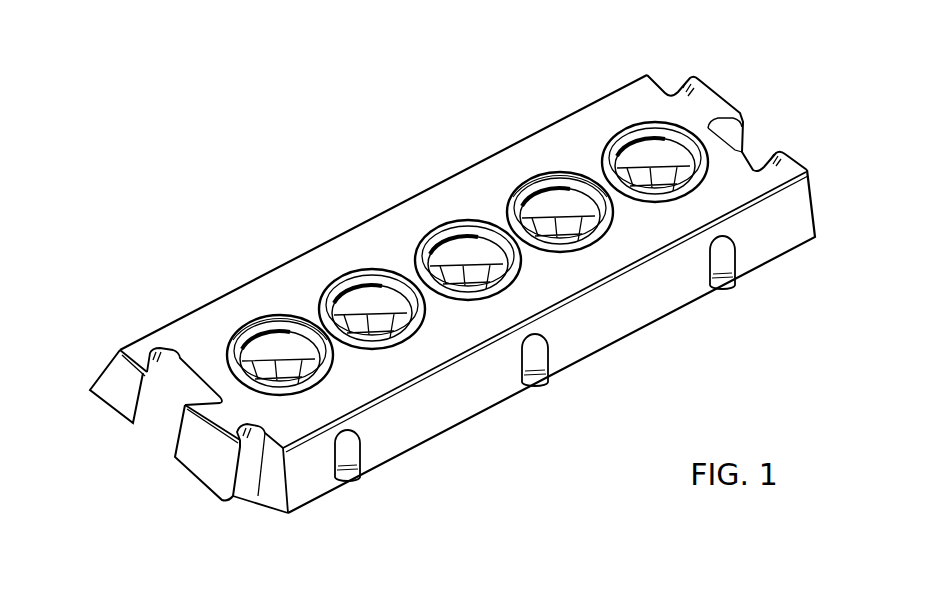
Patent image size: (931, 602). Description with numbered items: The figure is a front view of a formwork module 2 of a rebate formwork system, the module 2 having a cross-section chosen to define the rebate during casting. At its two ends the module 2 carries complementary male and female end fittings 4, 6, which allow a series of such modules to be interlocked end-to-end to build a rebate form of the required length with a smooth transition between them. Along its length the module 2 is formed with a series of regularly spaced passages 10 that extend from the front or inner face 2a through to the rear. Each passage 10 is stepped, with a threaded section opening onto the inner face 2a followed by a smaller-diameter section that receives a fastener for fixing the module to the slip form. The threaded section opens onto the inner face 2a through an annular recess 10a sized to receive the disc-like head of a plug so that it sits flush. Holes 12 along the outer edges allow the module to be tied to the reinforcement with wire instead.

The formwork module 2 is at (445, 286).
The front or inner face 2a is at (442, 336).
The male end fitting 4 is at (748, 103).
The female end fitting 6 is at (140, 443).
The passages 10 is at (633, 172).
The annular recess 10a is at (327, 367).
The holes 12 is at (353, 478).